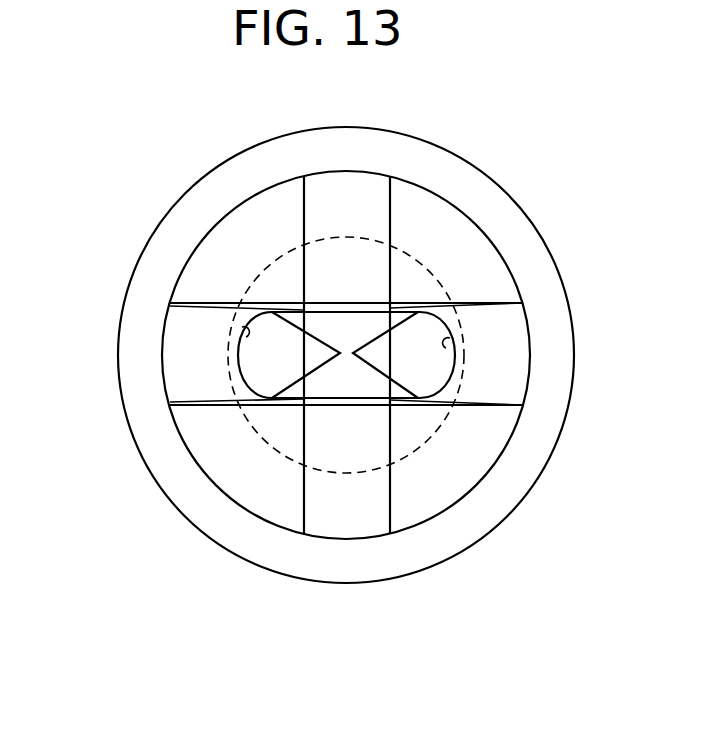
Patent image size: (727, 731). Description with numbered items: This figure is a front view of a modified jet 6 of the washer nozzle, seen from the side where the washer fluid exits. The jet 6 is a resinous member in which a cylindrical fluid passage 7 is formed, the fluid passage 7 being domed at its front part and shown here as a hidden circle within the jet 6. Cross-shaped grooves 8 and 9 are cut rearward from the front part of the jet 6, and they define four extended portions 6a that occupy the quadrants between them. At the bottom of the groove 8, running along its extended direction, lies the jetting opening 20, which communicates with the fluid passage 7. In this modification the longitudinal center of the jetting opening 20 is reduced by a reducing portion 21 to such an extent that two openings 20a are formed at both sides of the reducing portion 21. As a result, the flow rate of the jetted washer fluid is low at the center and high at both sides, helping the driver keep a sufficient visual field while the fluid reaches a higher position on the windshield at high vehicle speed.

The jet 6 is at (457, 147).
The extended portions 6a is at (217, 245).
The fluid passage 7 is at (345, 237).
The groove 8 is at (508, 325).
The groove 9 is at (343, 527).
The jetting opening 20 is at (268, 372).
The openings 20a is at (245, 343).
The reducing portion 21 is at (353, 333).